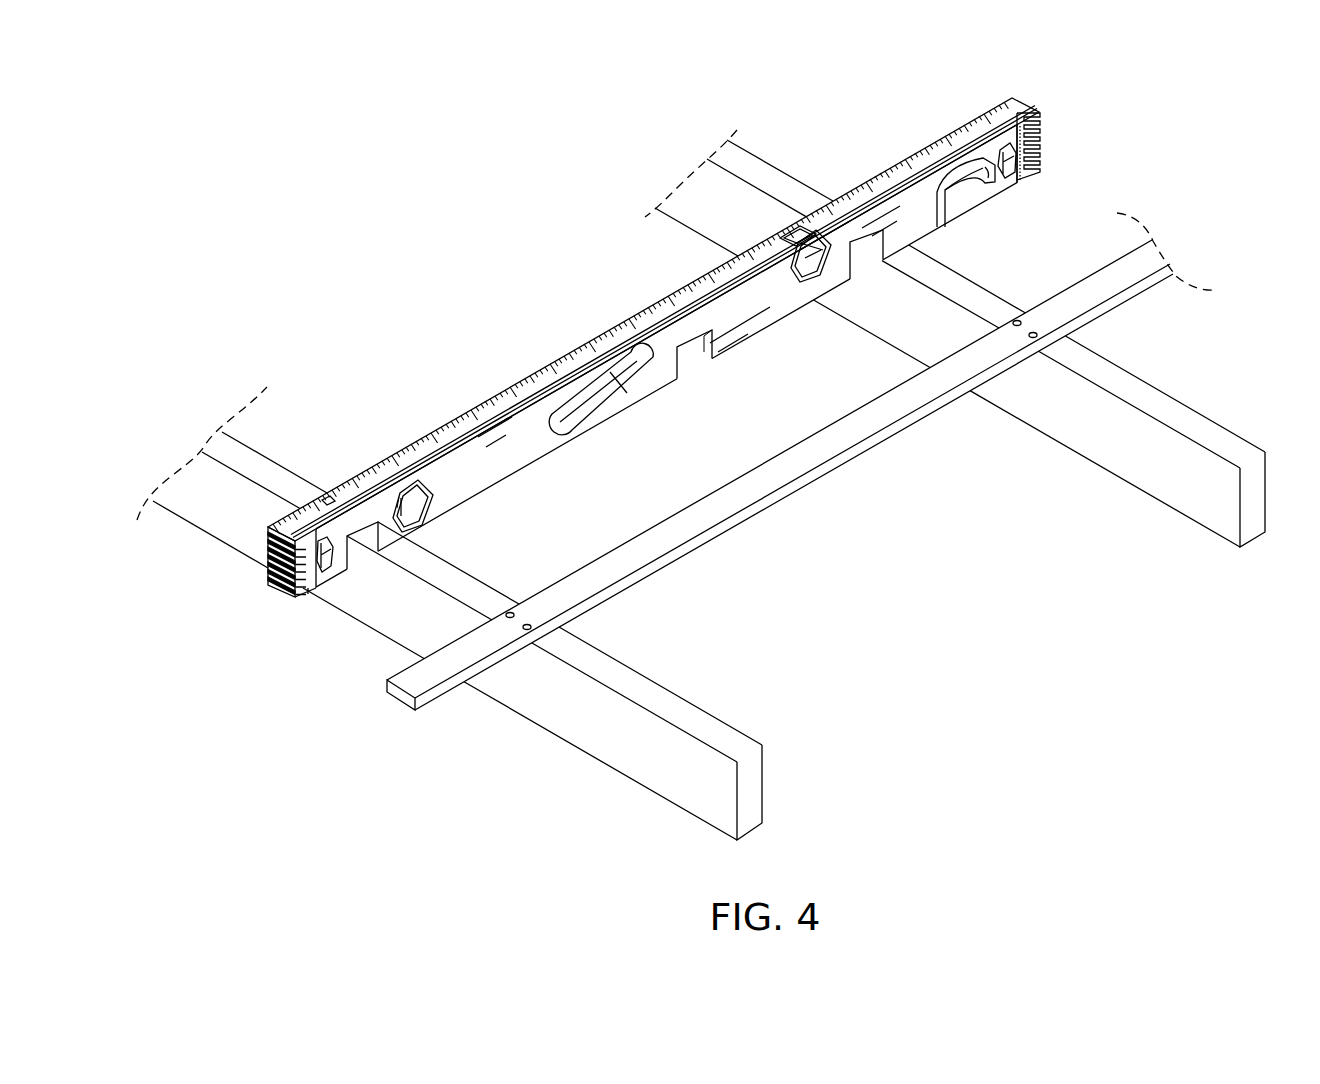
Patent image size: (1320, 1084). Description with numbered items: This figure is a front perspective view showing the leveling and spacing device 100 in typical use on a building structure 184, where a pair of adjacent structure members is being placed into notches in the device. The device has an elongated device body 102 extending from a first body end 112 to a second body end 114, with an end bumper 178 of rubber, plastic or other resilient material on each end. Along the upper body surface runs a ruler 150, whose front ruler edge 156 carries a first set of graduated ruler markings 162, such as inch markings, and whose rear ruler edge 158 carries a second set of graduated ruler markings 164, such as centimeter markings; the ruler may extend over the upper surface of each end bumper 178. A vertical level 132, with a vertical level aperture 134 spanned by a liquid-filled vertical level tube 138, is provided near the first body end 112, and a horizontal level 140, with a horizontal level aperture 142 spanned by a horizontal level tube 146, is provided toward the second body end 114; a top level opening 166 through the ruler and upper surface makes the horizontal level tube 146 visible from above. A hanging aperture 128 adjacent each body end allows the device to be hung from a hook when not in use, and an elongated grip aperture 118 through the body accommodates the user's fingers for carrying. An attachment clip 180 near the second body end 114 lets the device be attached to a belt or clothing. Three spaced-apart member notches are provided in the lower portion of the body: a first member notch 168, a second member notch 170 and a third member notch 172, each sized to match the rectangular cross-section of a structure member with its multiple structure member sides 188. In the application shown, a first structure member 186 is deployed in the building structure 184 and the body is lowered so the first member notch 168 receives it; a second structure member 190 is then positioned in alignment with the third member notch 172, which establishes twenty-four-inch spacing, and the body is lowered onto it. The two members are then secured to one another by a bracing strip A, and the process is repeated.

The leveling and spacing device 100 is at (500, 248).
The device body 102 is at (484, 510).
The first body end 112 is at (309, 597).
The second body end 114 is at (1028, 172).
The grip aperture 118 is at (608, 412).
The hanging aperture 128 is at (328, 498).
The vertical level 132 is at (334, 532).
The vertical level aperture 134 is at (441, 512).
The vertical level tube 138 is at (393, 495).
The horizontal level 140 is at (847, 239).
The horizontal level aperture 142 is at (838, 282).
The horizontal level tube 146 is at (796, 228).
The ruler 150 is at (469, 400).
The front ruler edge 156 is at (760, 335).
The rear ruler edge 158 is at (666, 300).
The first set of graduated ruler markings 162 is at (533, 412).
The second set of graduated ruler markings 164 is at (598, 342).
The top level opening 166 is at (776, 235).
The first member notch 168 is at (352, 560).
The second member notch 170 is at (702, 378).
The third member notch 172 is at (858, 262).
The end bumper 178 is at (287, 599).
The attachment clip 180 is at (963, 200).
The building structure 184 is at (501, 724).
The first structure member 186 is at (652, 672).
The structure member sides 188 is at (1185, 418).
The second structure member 190 is at (1136, 364).
The bracing strip A is at (836, 481).